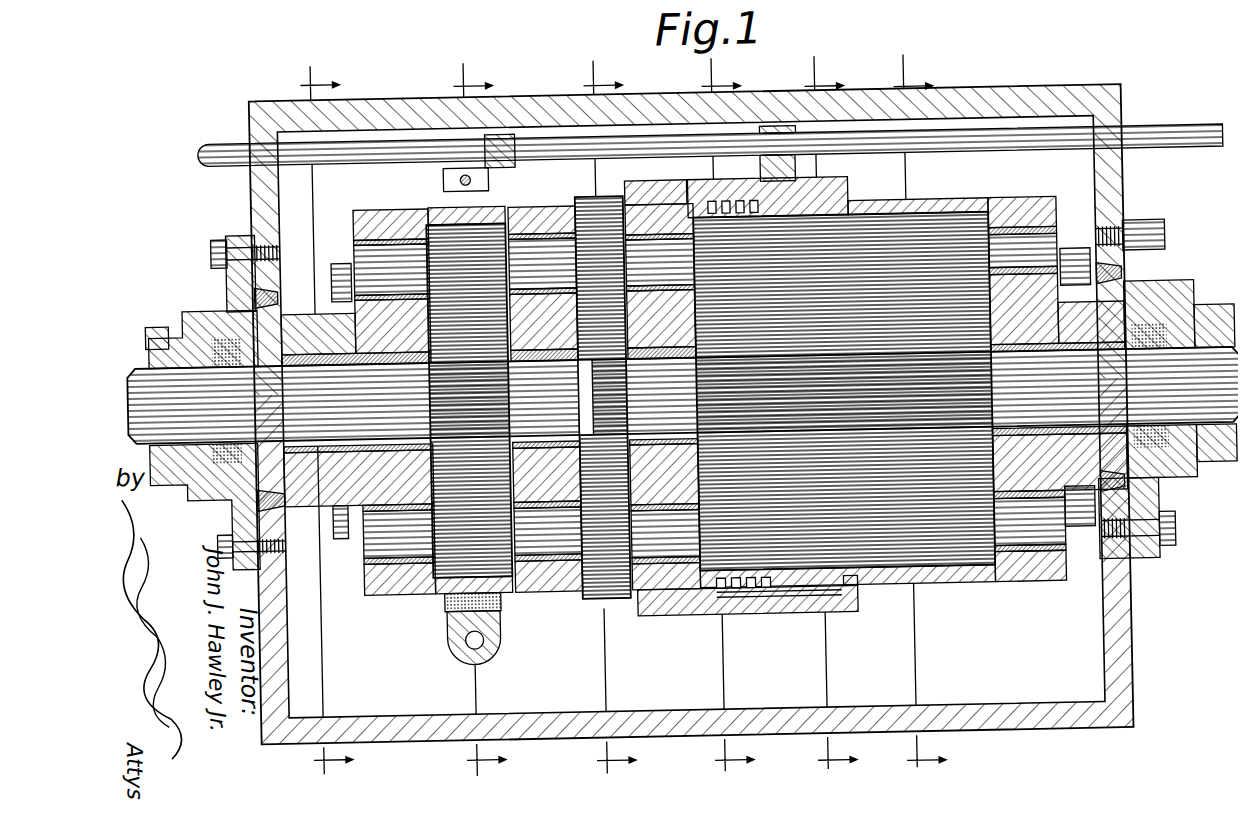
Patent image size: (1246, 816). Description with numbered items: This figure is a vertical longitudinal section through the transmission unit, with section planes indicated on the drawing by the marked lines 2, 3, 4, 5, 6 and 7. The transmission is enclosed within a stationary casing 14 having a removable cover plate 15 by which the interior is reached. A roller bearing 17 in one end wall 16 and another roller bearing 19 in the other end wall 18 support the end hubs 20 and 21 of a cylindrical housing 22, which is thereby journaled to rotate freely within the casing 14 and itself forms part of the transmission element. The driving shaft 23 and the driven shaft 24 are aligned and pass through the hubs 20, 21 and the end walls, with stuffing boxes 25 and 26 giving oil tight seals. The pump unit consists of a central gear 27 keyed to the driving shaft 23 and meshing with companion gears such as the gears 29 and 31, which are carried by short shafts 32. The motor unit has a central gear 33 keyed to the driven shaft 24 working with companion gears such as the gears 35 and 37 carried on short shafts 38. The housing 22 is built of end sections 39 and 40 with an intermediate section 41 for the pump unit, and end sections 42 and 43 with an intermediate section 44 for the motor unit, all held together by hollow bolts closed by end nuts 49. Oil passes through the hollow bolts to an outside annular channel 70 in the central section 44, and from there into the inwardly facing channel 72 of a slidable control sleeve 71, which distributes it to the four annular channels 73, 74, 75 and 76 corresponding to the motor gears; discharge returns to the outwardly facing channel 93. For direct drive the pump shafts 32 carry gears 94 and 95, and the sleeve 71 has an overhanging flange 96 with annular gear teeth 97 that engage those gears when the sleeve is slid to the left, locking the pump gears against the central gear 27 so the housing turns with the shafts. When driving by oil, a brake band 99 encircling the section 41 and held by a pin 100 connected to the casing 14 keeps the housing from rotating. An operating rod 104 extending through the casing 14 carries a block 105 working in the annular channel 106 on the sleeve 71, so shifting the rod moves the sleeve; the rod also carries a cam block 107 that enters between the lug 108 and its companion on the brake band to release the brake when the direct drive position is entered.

The section line 2 is at (326, 422).
The section line 3 is at (479, 422).
The section line 4 is at (609, 421).
The section line 5 is at (728, 422).
The section line 6— 6 is at (831, 421).
The section line 7— 7 is at (917, 420).
The stationary casing 14 is at (993, 702).
The cover plate 15 is at (966, 87).
The end wall 16 is at (246, 182).
The roller bearing 17 is at (227, 283).
The end wall 18 is at (1120, 178).
The roller bearing 19 is at (1153, 281).
The end hub 20 is at (234, 452).
The end hub 21 is at (1139, 500).
The cylindrical housing 22 is at (519, 583).
The driving shaft 23 is at (682, 395).
The driven shaft 24 is at (1172, 386).
The stuffing box 25 is at (147, 310).
The stuffing box 26 is at (1189, 447).
The central gear 27 is at (395, 376).
The companion gear 29 is at (498, 533).
The companion gear 31 is at (434, 206).
The short shaft 32 is at (524, 213).
The central gear 33 is at (960, 380).
The companion gear 35 is at (967, 577).
The companion gear 37 is at (929, 226).
The short shaft 38 is at (1014, 238).
The end section 39 is at (401, 586).
The end section 40 is at (506, 588).
The intermediate section 41 is at (494, 588).
The end section 42 is at (620, 588).
The end section 43 is at (1027, 569).
The intermediate section 44 is at (891, 594).
The end nut 49 is at (332, 259).
The annular channel 70 is at (836, 605).
The control sleeve 71 is at (851, 605).
The annular channel 72 is at (796, 606).
The annular channel 73 is at (741, 608).
The annular channel 74 is at (731, 608).
The annular channel 75 is at (716, 608).
The annular channel 76 is at (697, 602).
The annular channel 93 is at (912, 571).
The gear 94 is at (576, 590).
The gear 95 is at (600, 188).
The overhanging flange 96 is at (641, 606).
The annular gear teeth 97 is at (596, 600).
The brake band 99 is at (436, 597).
The pin 100 is at (455, 647).
The operating rod 104 is at (1170, 129).
The block 105 is at (773, 122).
The annular channel 106 is at (812, 596).
The cam block 107 is at (481, 181).
The lug 108 is at (458, 160).